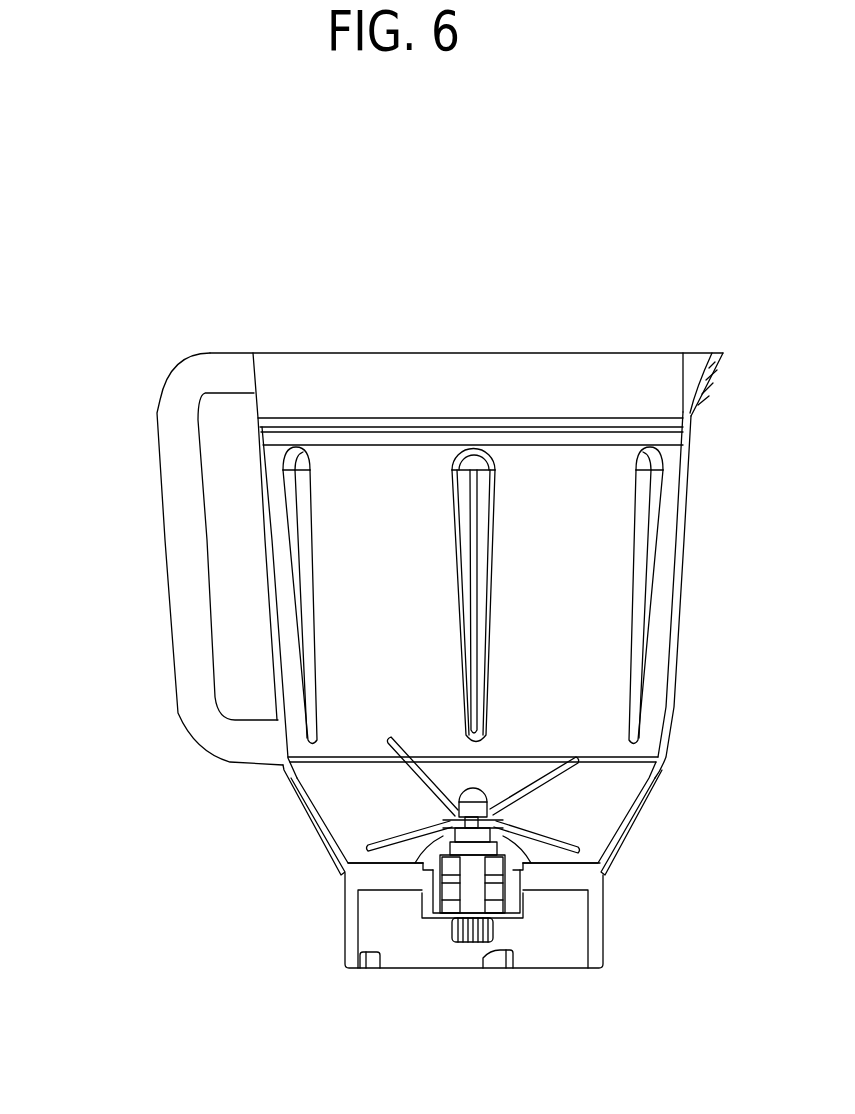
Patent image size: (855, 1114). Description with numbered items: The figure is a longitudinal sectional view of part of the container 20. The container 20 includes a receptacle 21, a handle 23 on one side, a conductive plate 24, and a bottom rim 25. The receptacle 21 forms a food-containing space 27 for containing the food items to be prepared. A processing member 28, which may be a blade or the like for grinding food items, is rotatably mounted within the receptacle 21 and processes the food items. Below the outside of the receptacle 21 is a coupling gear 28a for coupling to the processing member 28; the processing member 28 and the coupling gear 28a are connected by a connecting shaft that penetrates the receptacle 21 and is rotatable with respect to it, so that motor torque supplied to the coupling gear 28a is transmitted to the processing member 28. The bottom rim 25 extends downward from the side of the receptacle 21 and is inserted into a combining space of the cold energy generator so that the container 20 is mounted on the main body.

The container 20 is at (478, 217).
The receptacle 21 is at (687, 523).
The handle 23 is at (162, 494).
The conductive plate 24 is at (317, 825).
The bottom rim 25 is at (605, 911).
The food-containing space 27 is at (550, 547).
The processing member 28 is at (550, 790).
The coupling gear 28a is at (467, 942).